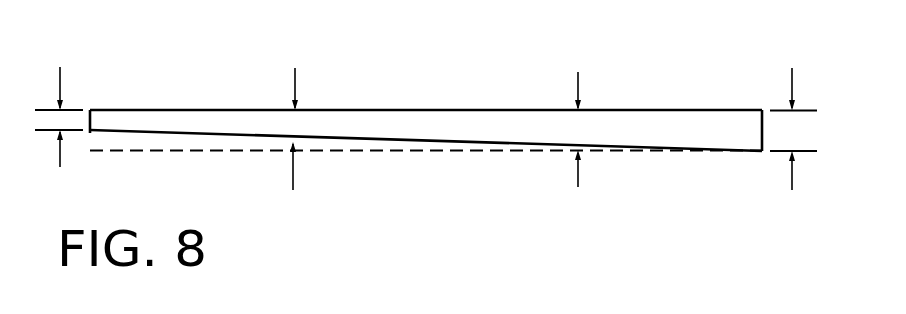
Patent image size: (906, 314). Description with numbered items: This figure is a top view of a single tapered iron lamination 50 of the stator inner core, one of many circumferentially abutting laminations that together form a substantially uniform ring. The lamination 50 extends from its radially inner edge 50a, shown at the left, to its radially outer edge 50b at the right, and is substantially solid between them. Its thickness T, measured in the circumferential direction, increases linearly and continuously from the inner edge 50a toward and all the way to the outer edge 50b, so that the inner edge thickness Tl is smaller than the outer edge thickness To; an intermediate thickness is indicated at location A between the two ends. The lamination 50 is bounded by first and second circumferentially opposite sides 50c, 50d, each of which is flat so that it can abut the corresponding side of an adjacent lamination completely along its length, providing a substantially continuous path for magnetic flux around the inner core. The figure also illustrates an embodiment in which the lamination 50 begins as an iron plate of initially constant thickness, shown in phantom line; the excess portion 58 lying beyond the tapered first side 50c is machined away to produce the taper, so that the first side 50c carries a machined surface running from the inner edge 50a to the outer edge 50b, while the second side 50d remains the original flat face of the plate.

The tapered iron lamination 50 is at (423, 129).
The radially inner edge 50a is at (88, 122).
The radially outer edge 50b is at (763, 130).
The first circumferentially opposite side 50c is at (446, 141).
The second circumferentially opposite side 50d is at (463, 110).
The excess portion 58 is at (205, 152).
The inner edge thickness Tl is at (60, 84).
The outer edge thickness To is at (792, 80).
The thickness T is at (578, 82).
The thickness at location A is at (295, 84).